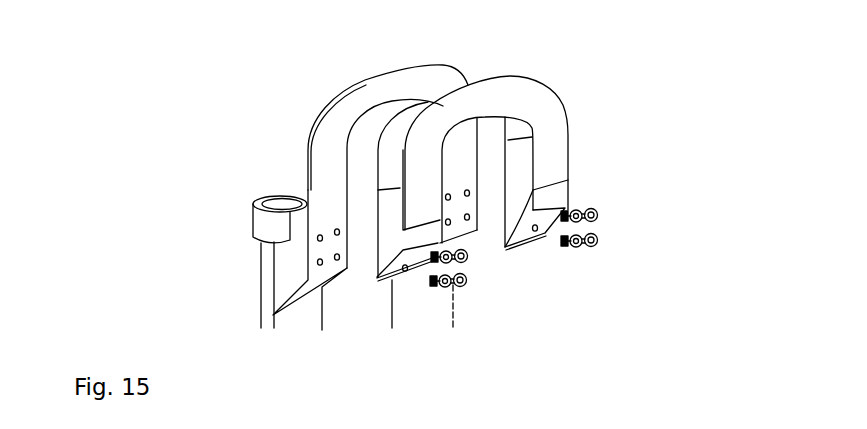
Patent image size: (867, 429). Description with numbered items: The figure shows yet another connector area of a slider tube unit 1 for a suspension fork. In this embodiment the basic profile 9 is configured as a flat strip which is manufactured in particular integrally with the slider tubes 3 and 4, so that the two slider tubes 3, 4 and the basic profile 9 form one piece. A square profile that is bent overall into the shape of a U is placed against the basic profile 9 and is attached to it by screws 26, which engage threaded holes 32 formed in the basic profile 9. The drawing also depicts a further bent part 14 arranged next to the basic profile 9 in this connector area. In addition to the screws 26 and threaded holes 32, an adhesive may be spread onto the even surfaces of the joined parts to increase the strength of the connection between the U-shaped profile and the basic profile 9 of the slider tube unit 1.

The slider tube unit 1 is at (177, 137).
The slider tube 3 is at (262, 292).
The slider tube 4 is at (445, 315).
The basic profile 9 is at (343, 117).
The second clamp bracket 14 is at (550, 110).
The screws 26 is at (608, 248).
The threaded holes 32 is at (347, 270).